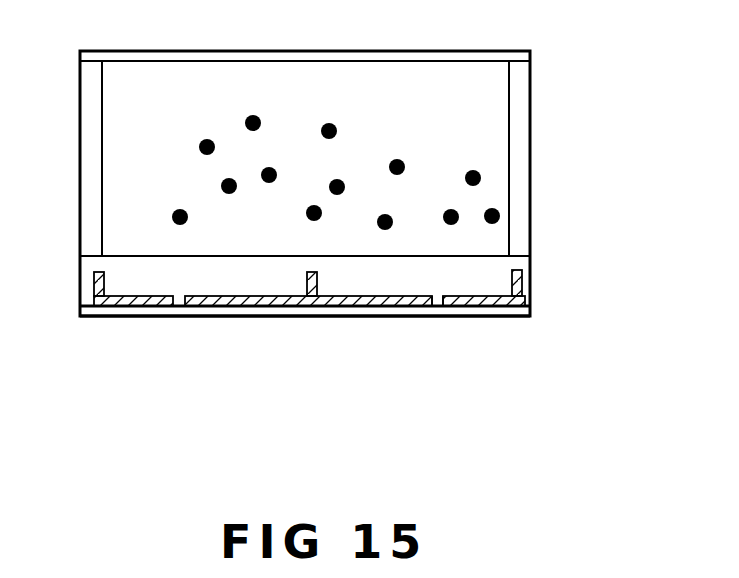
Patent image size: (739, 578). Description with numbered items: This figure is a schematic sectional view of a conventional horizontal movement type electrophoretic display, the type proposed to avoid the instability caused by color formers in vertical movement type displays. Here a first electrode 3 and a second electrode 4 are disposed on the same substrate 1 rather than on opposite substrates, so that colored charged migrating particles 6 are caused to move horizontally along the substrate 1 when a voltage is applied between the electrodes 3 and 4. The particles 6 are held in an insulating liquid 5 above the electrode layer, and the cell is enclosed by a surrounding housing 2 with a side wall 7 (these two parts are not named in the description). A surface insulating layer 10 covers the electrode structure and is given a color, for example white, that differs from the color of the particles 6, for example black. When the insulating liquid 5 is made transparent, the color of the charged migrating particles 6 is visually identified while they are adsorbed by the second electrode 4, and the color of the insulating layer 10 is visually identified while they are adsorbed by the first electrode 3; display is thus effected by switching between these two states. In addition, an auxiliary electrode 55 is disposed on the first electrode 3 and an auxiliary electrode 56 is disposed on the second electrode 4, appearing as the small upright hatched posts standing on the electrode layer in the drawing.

The substrate 1 is at (220, 310).
The case 2 is at (498, 56).
The first electrode 3 is at (148, 308).
The second electrode 4 is at (268, 307).
The insulating liquid 5 is at (470, 98).
The charged migrating particles 6 is at (478, 173).
The side wall 7 is at (522, 123).
The surface insulating layer 10 is at (427, 278).
The auxiliary electrode 55 is at (97, 308).
The auxiliary electrode 56 is at (310, 313).